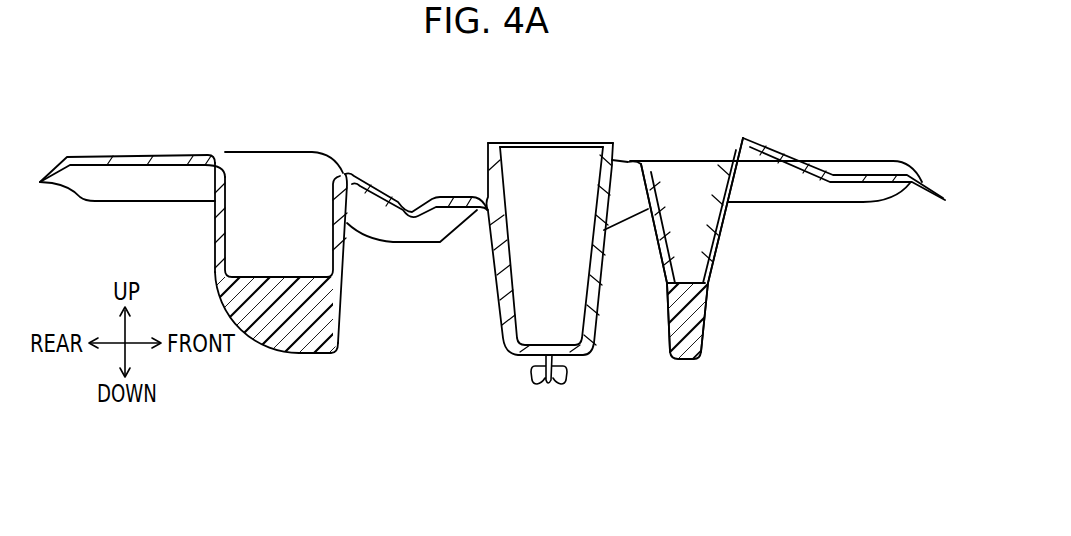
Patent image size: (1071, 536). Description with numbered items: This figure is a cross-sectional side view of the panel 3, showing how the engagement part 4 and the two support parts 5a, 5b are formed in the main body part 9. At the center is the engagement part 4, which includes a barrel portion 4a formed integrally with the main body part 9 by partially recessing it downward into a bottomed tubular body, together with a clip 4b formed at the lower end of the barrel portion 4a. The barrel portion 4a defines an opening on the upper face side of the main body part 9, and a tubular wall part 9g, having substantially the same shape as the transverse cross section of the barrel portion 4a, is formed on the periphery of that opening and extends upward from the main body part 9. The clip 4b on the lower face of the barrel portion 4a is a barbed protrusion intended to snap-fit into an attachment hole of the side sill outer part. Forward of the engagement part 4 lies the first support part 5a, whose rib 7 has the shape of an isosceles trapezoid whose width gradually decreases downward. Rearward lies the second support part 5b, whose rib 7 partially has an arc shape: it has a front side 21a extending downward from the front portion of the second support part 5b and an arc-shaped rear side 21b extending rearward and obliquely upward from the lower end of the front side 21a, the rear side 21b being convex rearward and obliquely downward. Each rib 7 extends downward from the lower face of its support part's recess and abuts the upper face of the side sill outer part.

The roof panel 3 is at (655, 120).
The engagement part 4 is at (553, 442).
The barrel portion 4a is at (494, 284).
The clip 4b is at (555, 386).
The first support part 5a is at (748, 253).
The second support part 5b is at (200, 253).
The rib 7 is at (313, 297).
The main body part 9 is at (789, 151).
The tubular wall part 9g is at (486, 160).
The front side 21a is at (338, 317).
The arc-shaped rear side 21b is at (260, 337).